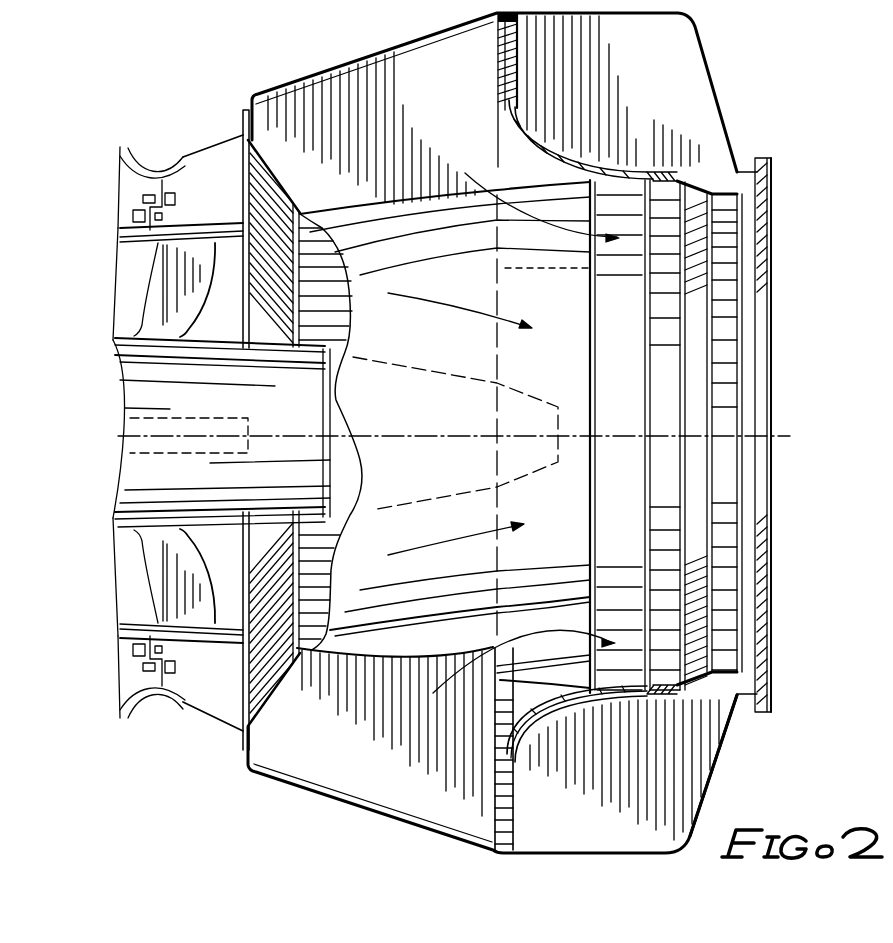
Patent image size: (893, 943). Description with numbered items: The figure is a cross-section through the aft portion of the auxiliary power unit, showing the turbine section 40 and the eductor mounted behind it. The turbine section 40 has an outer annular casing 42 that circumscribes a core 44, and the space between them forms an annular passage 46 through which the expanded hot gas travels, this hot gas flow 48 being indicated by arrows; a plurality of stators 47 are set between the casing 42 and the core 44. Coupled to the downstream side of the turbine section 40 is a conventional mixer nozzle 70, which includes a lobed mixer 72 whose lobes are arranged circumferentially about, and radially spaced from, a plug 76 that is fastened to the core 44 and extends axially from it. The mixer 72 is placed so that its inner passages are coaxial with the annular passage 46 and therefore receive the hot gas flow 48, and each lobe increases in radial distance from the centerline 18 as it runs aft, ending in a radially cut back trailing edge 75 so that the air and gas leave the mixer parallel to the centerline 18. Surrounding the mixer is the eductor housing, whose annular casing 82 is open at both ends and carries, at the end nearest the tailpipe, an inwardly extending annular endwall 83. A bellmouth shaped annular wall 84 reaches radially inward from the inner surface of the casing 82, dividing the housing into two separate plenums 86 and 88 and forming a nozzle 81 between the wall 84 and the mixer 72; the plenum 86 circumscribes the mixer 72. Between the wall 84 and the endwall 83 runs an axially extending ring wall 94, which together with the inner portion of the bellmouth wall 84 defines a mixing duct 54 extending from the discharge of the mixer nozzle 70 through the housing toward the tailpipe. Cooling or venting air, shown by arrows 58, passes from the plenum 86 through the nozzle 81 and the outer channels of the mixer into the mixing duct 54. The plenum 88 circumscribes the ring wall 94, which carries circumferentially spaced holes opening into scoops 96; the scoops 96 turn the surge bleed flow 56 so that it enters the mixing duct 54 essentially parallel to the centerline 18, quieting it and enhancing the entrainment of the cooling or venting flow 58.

The centerline 18 is at (785, 441).
The turbine section 40 is at (208, 736).
The outer annular casing 42 is at (213, 173).
The core 44 is at (227, 412).
The annular passage 46 is at (201, 304).
The stators 47 is at (182, 591).
The hot gas flow 48 is at (428, 298).
The mixing duct 54 is at (654, 429).
The surge bleed flow 56 is at (726, 188).
The cooling or venting air 58 is at (472, 182).
The mixer nozzle 70 is at (358, 47).
The lobed mixer 72 is at (433, 640).
The trailing edge 75 is at (592, 380).
The plug 76 is at (414, 424).
The nozzle 81 is at (613, 698).
The annular casing 82 is at (604, 850).
The endwall 83 is at (704, 772).
The bellmouth shaped annular wall 84 is at (520, 64).
The plenum 86 is at (437, 96).
The plenum 88 is at (647, 69).
The ring wall 94 is at (664, 172).
The scoop 96 is at (738, 195).